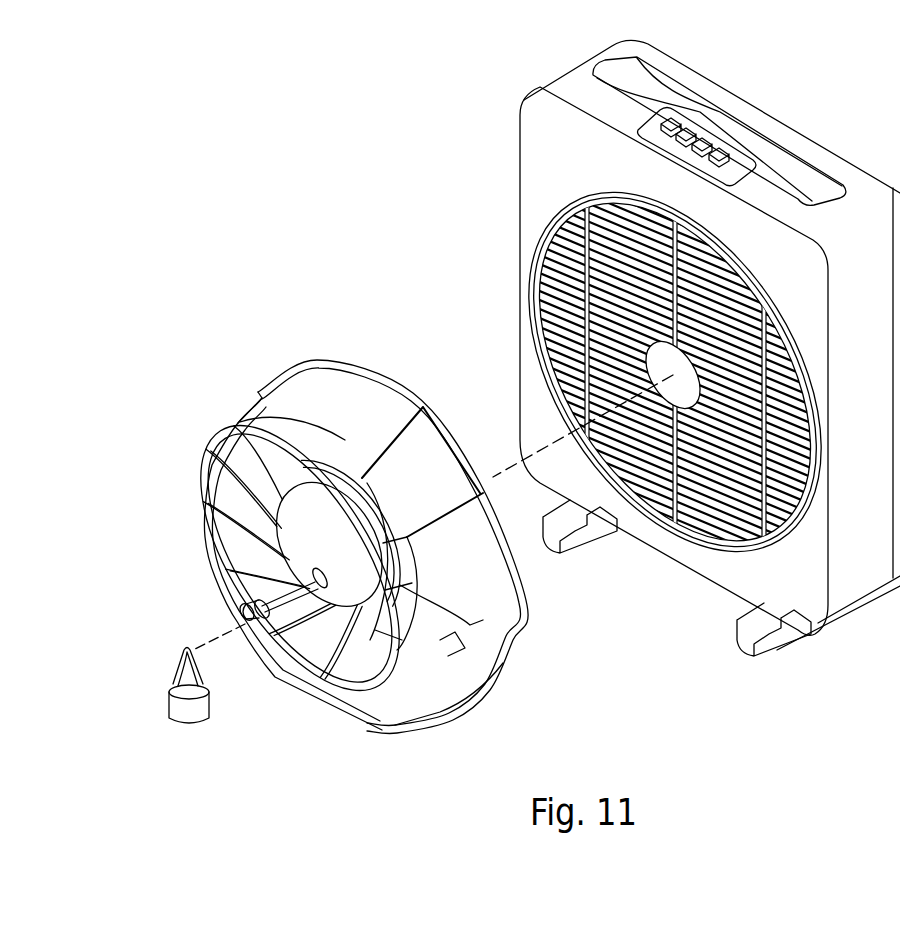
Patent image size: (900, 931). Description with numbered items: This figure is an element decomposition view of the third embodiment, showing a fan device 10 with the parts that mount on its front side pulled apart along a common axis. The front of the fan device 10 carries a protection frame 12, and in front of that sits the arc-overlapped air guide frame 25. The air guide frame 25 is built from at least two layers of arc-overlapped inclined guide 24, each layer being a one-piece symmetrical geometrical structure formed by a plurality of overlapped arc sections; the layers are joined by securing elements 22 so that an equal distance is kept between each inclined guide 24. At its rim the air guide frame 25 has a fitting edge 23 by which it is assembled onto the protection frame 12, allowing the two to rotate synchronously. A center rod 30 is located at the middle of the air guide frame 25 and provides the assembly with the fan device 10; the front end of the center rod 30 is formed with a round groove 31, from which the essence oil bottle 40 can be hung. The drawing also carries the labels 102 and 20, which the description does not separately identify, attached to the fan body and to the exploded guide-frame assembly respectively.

The fan device 10 is at (807, 112).
The front panel of housing 102 is at (540, 160).
The protection frame 12 is at (527, 283).
The blower assembly 20 is at (337, 520).
The securing elements 22 is at (233, 527).
The fitting edge 23 is at (360, 370).
The arc-overlapped inclined guide 24 is at (273, 403).
The arc-overlapped air guide frame 25 is at (445, 734).
The center rod 30 is at (316, 586).
The round groove 31 is at (243, 603).
The essence oil bottle 40 is at (177, 707).